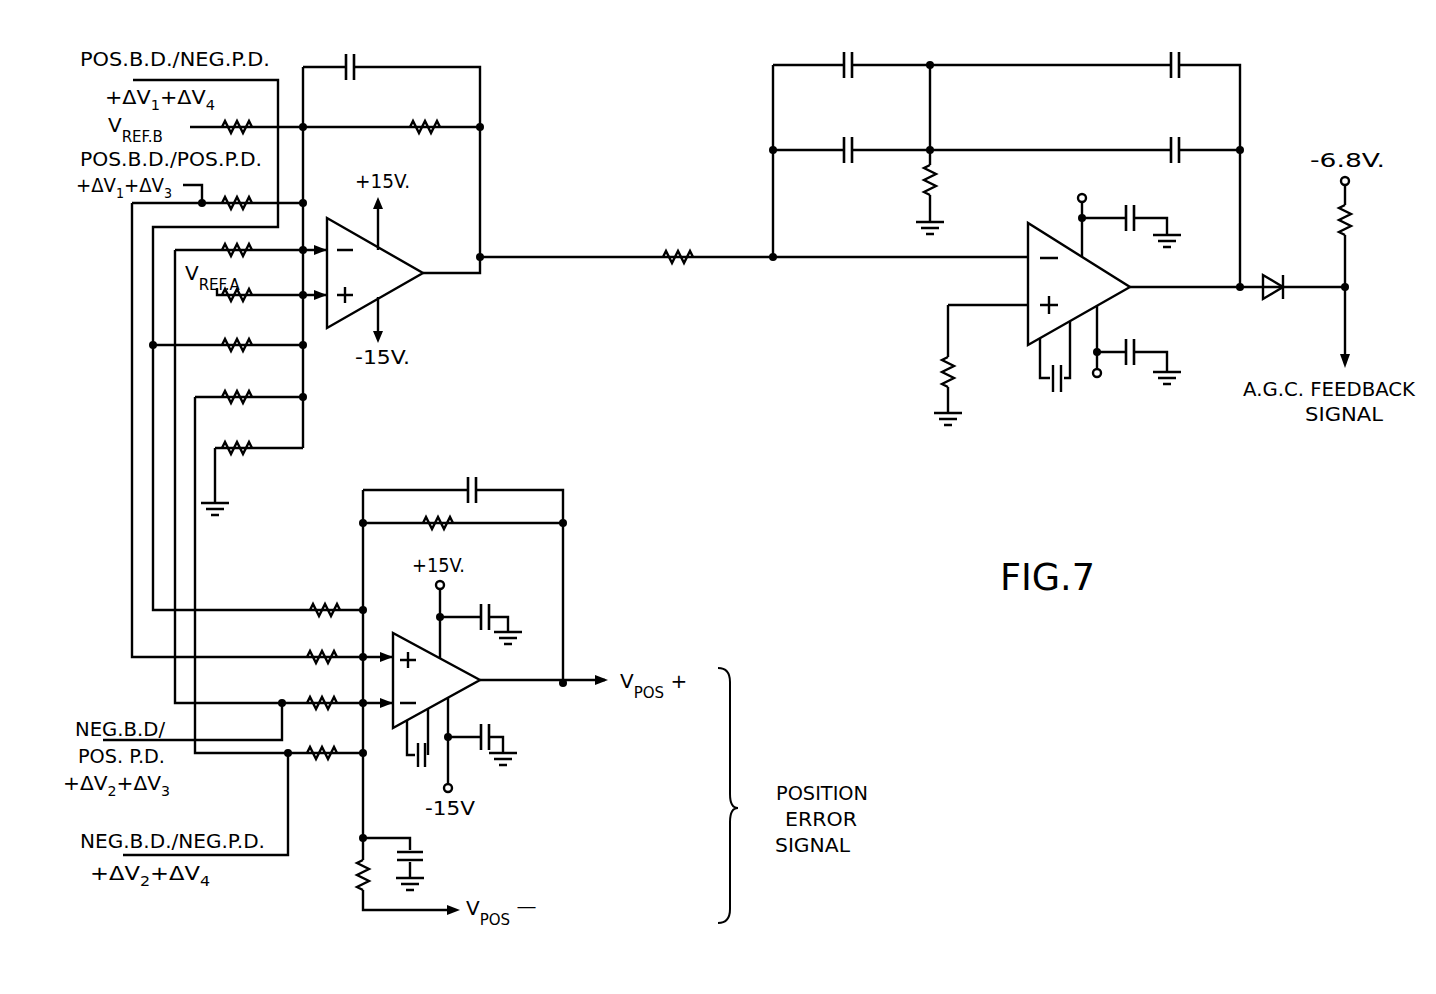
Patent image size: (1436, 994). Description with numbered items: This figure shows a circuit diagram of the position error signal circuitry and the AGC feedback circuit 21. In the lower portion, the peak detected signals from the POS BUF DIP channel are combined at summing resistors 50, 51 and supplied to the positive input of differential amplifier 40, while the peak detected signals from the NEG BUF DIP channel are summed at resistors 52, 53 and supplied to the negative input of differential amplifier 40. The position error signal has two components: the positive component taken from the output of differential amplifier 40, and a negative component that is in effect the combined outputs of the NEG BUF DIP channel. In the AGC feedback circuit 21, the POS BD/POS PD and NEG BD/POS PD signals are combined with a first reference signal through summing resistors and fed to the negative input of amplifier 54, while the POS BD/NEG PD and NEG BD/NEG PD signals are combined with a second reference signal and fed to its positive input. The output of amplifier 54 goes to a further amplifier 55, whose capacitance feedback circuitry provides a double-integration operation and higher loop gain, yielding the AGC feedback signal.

The AGC feedback circuit 21 is at (663, 343).
The differential amplifier 40 is at (438, 692).
The summing resistor 50 is at (318, 609).
The summing resistor 51 is at (308, 654).
The summing resistor 52 is at (320, 762).
The summing resistor 53 is at (309, 707).
The amplifier 54 is at (397, 292).
The amplifier 55 is at (1131, 297).